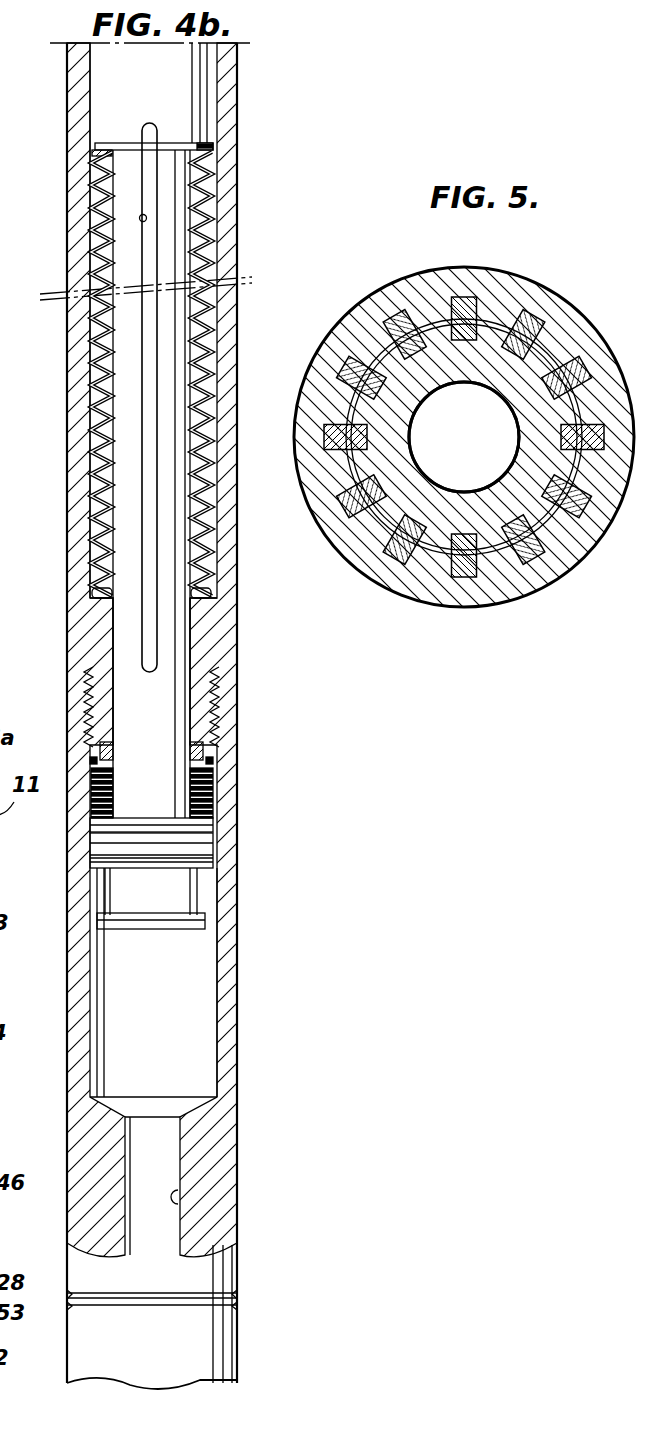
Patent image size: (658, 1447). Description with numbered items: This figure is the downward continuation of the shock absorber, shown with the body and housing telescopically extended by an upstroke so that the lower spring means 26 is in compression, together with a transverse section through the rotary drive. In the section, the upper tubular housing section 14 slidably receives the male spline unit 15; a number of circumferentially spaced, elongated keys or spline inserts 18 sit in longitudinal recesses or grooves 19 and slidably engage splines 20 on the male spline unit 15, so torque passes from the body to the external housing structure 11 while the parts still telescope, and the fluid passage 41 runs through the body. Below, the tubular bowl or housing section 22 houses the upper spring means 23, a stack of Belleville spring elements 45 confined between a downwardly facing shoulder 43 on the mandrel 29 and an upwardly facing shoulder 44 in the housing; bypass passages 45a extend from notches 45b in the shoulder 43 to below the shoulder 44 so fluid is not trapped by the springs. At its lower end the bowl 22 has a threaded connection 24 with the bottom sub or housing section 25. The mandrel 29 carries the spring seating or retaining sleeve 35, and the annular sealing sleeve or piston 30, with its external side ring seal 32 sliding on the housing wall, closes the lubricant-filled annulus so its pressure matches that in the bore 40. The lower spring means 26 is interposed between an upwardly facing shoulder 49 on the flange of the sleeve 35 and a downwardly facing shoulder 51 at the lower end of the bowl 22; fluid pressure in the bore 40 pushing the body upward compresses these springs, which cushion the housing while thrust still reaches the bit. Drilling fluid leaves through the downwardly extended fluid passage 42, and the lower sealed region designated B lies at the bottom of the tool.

In FIG. 4B, the external housing structure 11 is at (228, 178).
In FIG. 5, the upper tubular housing section 14 is at (583, 335).
In FIG. 5, the male spline unit 15 is at (517, 399).
In FIG. 5, the keys or spline inserts 18 is at (450, 312).
In FIG. 5, the recesses or grooves 19 is at (355, 372).
In FIG. 5, the splines 20 is at (525, 343).
In FIG. 4B, the tubular bowl or housing section 22 is at (225, 262).
In FIG. 4B, the upper spring means 23 is at (90, 440).
In FIG. 4B, the threaded connection 24 is at (215, 690).
In FIG. 4B, the bottom sub or housing section 25 is at (232, 1018).
In FIG. 4B, the lower spring means 26 is at (215, 796).
In FIG. 4B, the mandrel 29 is at (156, 724).
In FIG. 4B, the sealing sleeve or piston 30 is at (215, 843).
In FIG. 4B, the external side ring seal 32 is at (95, 857).
In FIG. 4B, the spring seating or retaining sleeve 35 is at (200, 887).
In FIG. 4B, the bore 40 is at (156, 1049).
In FIG. 5, the fluid passage 41 is at (468, 474).
In FIG. 4B, the downwardly extended fluid passage 42 is at (178, 1199).
In FIG. 4B, the downwardly facing shoulder 43 is at (92, 153).
In FIG. 4B, the upwardly facing shoulder 44 is at (95, 592).
In FIG. 4B, the spring elements 45 is at (92, 356).
In FIG. 4B, the bypass passages 45a is at (140, 218).
In FIG. 4B, the notches 45b is at (140, 147).
In FIG. 4B, the upwardly facing shoulder 49 is at (100, 824).
In FIG. 4B, the downwardly facing shoulder 51 is at (213, 762).
In FIG. 4B, the lower housing portion B is at (238, 1356).